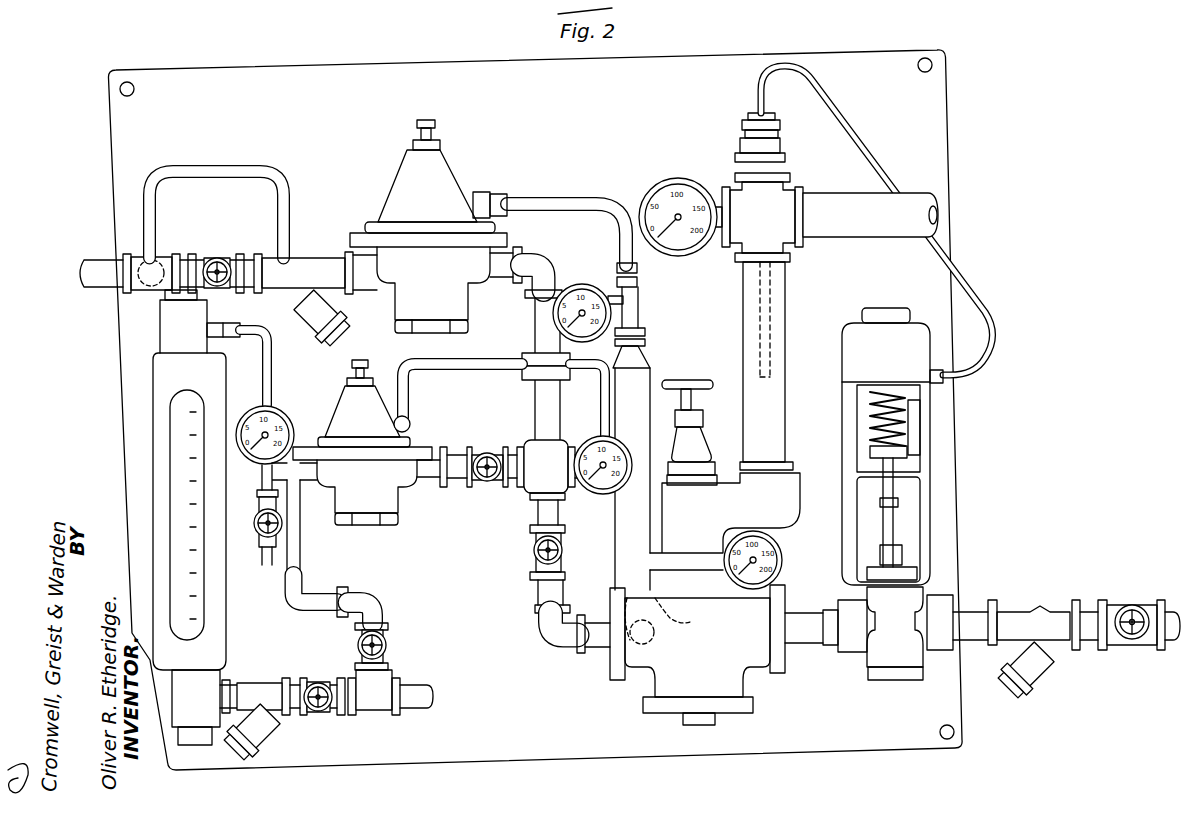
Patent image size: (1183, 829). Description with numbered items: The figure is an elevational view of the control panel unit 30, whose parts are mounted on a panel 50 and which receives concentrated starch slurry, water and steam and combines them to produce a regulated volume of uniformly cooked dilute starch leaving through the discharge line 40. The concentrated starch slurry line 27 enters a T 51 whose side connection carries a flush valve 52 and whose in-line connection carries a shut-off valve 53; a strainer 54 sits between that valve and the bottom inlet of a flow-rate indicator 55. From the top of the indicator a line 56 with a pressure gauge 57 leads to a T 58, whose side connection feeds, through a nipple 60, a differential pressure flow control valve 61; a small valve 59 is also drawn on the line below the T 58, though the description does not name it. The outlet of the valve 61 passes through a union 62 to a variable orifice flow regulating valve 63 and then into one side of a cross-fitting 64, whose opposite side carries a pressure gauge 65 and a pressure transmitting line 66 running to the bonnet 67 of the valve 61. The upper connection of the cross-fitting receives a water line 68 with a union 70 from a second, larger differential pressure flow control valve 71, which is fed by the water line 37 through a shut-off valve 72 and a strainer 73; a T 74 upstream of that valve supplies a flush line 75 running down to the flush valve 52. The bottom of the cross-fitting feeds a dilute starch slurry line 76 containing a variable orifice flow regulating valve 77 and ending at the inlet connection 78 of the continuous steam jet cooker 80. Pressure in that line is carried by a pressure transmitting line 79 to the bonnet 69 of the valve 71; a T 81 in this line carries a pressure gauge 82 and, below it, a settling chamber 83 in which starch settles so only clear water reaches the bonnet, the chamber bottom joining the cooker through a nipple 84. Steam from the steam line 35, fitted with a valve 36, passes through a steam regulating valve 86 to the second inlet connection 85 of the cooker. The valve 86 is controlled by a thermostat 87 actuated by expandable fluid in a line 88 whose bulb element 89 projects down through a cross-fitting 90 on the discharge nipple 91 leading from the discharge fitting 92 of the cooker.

The concentrated starch slurry line 27 is at (418, 709).
The control panel unit 30 is at (882, 45).
The steam line 35 is at (1168, 606).
The valve 36 is at (1132, 640).
The water line 37 is at (95, 268).
The discharge line 40 is at (895, 200).
The panel 50 is at (727, 58).
The T 51 is at (377, 704).
The flush valve 52 is at (386, 645).
The shut-off valve 53 is at (318, 683).
The strainer 54 is at (272, 688).
The flow-rate indicator 55 is at (230, 618).
The line 56 is at (262, 364).
The pressure gauge 57 is at (256, 410).
The T 58 is at (262, 475).
The valve 59 is at (262, 530).
The nipple 60 is at (300, 470).
The differential pressure flow control valve 61 is at (329, 404).
The union 62 is at (428, 478).
The variable orifice flow regulating valve 63 is at (487, 452).
The cross-fitting 64 is at (542, 476).
The pressure gauge 65 is at (605, 494).
The pressure transmitting line 66 is at (605, 402).
The bonnet 67 is at (407, 437).
The water line 68 is at (535, 397).
The bonnet 69 is at (431, 226).
The union 70 is at (525, 355).
The second differential pressure flow control valve 71 is at (386, 188).
The shut-off valve 72 is at (217, 257).
The strainer 73 is at (320, 262).
The T 74 is at (157, 285).
The flush line 75 is at (217, 177).
The dilute starch slurry line 76 is at (558, 531).
The variable orifice flow regulating valve 77 is at (535, 566).
The inlet connection 78 is at (610, 666).
The pressure transmitting line 79 is at (553, 197).
The steam jet cooker 80 is at (789, 556).
The T 81 is at (641, 298).
The pressure gauge 82 is at (575, 287).
The settling chamber 83 is at (648, 393).
The nipple 84 is at (658, 620).
The second inlet connection 85 is at (790, 650).
The steam regulating valve 86 is at (872, 660).
The thermostat 87 is at (943, 466).
The line 88 is at (968, 290).
The bulb element 89 is at (745, 268).
The cross-fitting 90 is at (783, 196).
The discharge nipple 91 is at (786, 352).
The discharge fitting 92 is at (797, 491).